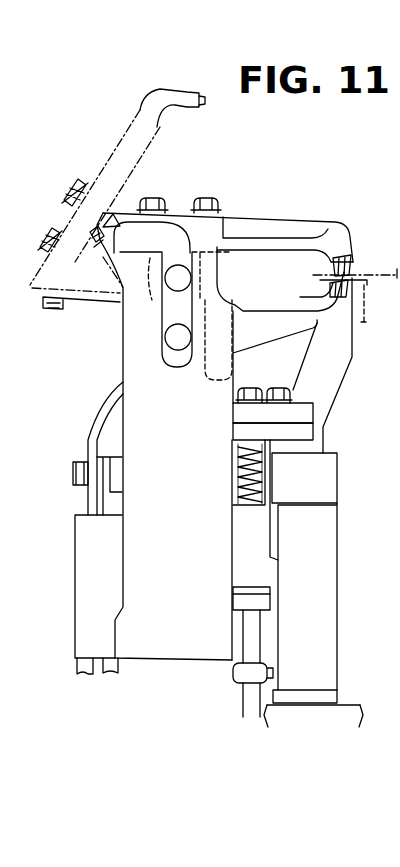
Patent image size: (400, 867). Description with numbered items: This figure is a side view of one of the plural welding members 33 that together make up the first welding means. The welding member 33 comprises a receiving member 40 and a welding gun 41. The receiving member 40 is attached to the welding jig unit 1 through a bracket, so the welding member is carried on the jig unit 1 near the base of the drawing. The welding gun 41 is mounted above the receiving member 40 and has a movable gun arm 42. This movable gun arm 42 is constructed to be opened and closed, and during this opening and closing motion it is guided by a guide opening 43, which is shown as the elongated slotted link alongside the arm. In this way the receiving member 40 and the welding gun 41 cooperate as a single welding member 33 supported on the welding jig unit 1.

The welding jig unit 1 is at (352, 704).
The welding member 33 is at (291, 199).
The receiving member 40 is at (346, 368).
The welding gun 41 is at (278, 322).
The movable gun arm 42 is at (262, 227).
The guide opening 43 is at (168, 302).